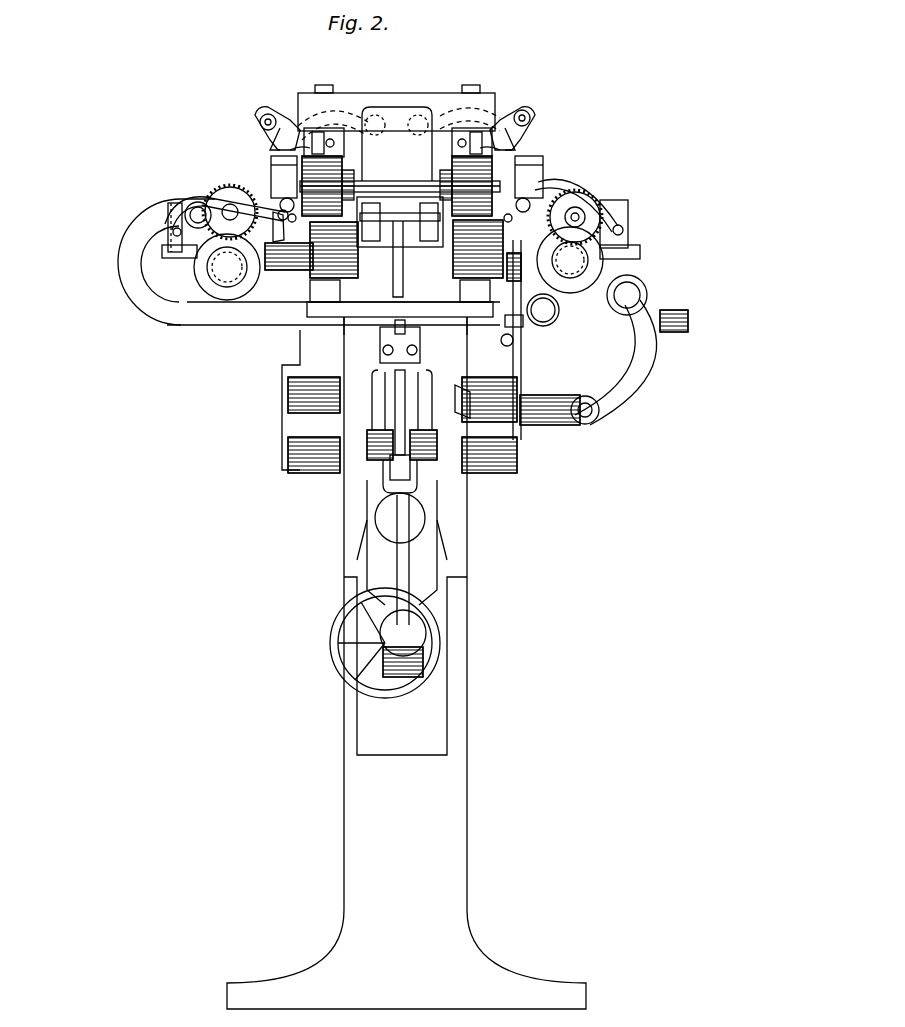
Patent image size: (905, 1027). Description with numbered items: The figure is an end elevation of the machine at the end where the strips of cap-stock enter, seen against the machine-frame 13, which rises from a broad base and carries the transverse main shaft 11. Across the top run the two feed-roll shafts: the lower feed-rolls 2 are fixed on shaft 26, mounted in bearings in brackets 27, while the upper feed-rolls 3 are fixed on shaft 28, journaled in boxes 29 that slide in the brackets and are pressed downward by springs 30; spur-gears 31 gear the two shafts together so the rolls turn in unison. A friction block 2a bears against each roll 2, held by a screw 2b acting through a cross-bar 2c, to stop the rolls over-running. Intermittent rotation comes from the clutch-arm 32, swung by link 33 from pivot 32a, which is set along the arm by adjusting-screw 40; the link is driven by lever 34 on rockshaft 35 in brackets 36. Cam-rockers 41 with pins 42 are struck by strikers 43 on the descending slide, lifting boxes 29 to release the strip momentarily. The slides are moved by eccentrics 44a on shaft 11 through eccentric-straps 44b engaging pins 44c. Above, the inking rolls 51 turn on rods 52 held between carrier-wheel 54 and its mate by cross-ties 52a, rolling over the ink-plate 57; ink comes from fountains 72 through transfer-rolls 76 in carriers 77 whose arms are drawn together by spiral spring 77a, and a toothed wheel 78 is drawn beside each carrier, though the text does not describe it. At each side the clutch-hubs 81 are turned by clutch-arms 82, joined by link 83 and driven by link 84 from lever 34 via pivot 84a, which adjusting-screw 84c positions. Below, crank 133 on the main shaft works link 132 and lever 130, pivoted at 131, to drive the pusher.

The lower feed-roll 2 is at (312, 287).
The friction block 2a is at (292, 312).
The screw 2b is at (417, 338).
The cross-bar 2c is at (368, 318).
The upper feed-roll 3 is at (398, 142).
The main shaft 11 is at (412, 633).
The machine-frame 13 is at (467, 770).
The shaft 26 is at (404, 295).
The bracket 27 is at (283, 272).
The shaft 28 is at (400, 170).
The box 29 is at (272, 170).
The spring 30 is at (324, 156).
The spur-gear 31 is at (548, 130).
The clutch-arm 32 is at (512, 300).
The pivot 32a is at (521, 328).
The link 33 is at (524, 346).
The lever 34 is at (468, 405).
The rockshaft 35 is at (326, 375).
The bracket 36 is at (282, 427).
The adjusting-screw 40 is at (503, 345).
The cam-rocker 41 is at (280, 205).
The pin 42 is at (406, 228).
The striker 43 is at (335, 135).
The eccentric 44a is at (345, 650).
The eccentric-strap 44b is at (375, 578).
The pin 44c is at (420, 516).
The inking roll 51 is at (258, 115).
The rod or arbor 52 is at (266, 112).
The cross-tie 52a is at (315, 115).
The carrier-wheel 54 is at (280, 125).
The ink-plate 57 is at (292, 148).
The ink fountain 72 is at (175, 205).
The transfer-roll 76 is at (270, 227).
The carrier 77 is at (208, 197).
The spiral spring 77a is at (196, 232).
The gear 78 is at (228, 188).
The clutch-hub 81 is at (220, 292).
The clutch-arm 82 is at (208, 280).
The link 83 is at (152, 315).
The link 84 is at (648, 370).
The pivot 84a is at (647, 293).
The adjusting-screw 84c is at (688, 322).
The lever 130 is at (394, 262).
The pivot 131 is at (380, 448).
The link 132 is at (412, 565).
The crank 133 is at (405, 680).